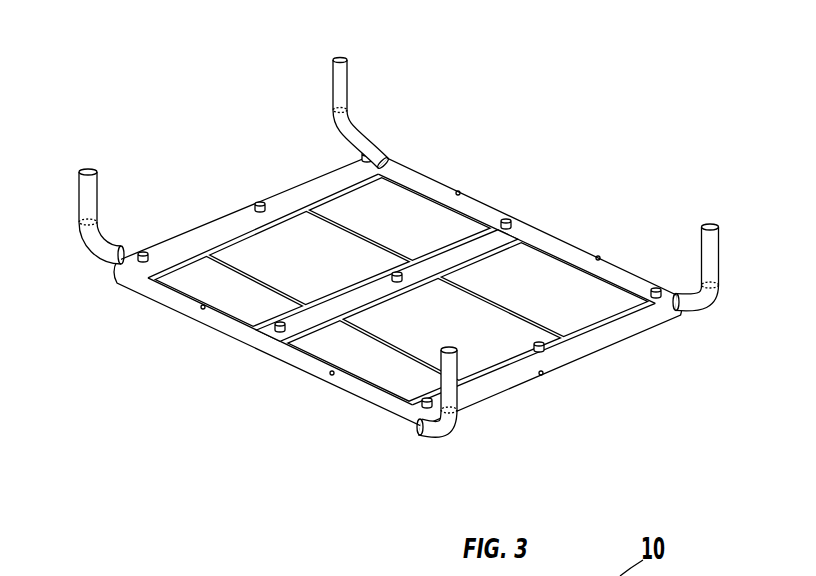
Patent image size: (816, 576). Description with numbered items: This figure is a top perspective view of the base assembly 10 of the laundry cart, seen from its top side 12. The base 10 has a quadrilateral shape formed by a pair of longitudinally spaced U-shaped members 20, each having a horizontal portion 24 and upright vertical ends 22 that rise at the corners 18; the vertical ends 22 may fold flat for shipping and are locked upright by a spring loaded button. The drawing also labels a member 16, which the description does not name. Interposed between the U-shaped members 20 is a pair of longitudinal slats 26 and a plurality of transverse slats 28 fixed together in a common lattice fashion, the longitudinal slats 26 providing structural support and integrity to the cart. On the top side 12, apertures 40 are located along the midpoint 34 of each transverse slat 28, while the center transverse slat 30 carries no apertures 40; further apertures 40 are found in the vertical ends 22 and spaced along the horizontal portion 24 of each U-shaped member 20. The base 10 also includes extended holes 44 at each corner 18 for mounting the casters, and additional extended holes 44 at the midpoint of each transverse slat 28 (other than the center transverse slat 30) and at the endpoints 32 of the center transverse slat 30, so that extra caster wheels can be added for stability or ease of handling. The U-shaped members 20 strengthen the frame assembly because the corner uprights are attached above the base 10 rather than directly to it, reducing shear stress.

The base assembly 10 is at (606, 67).
The top side 12 is at (421, 207).
The frame rail 16 is at (226, 222).
The corner 18 is at (348, 130).
The U-shaped member 20 is at (475, 197).
The vertical end 22 is at (345, 80).
The horizontal portion 24 is at (491, 213).
The longitudinal slat 26 is at (538, 298).
The transverse slat 28 is at (275, 203).
The center transverse slat 30 is at (336, 320).
The endpoint 32 is at (523, 222).
The midpoint 34 is at (260, 200).
The aperture 40 is at (84, 170).
The extended hole 44 is at (143, 252).